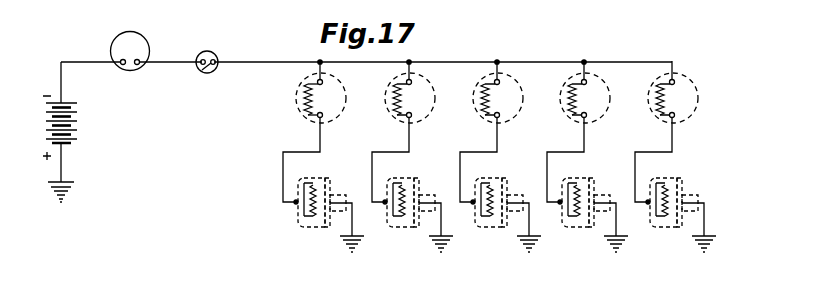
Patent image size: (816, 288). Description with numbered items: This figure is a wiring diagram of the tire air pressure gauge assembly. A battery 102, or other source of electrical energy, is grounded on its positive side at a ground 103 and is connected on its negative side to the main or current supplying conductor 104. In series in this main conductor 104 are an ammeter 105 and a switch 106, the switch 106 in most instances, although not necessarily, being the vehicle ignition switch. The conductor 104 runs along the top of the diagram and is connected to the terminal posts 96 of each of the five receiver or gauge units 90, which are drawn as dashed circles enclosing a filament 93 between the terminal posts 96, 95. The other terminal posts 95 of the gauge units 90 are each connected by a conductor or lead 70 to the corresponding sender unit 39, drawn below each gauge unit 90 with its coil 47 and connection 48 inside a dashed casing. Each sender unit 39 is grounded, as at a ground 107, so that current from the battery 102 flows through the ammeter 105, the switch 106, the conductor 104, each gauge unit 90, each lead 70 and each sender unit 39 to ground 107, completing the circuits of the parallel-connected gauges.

The sender unit 39 is at (303, 225).
The relay coil 47 is at (313, 193).
The relay connection 48 is at (296, 204).
The conductor or lead 70 is at (283, 160).
The receiver or gauge unit 90 is at (297, 112).
The lamp filament 93 is at (303, 95).
The terminal post 95 is at (323, 114).
The terminal post 96 is at (323, 84).
The battery 102 is at (77, 128).
The ground 103 is at (77, 193).
The main or current supplying conductor 104 is at (245, 64).
The ammeter 105 is at (113, 43).
The switch 106 is at (211, 52).
The ground 107 is at (345, 243).